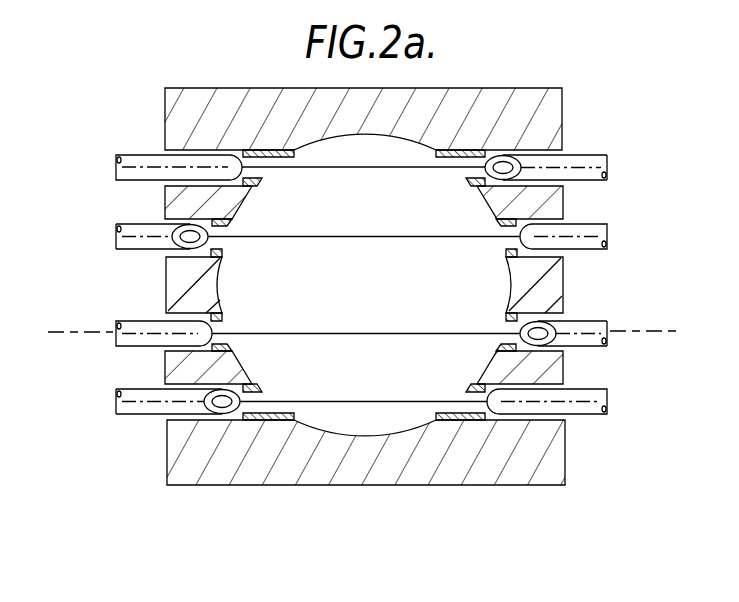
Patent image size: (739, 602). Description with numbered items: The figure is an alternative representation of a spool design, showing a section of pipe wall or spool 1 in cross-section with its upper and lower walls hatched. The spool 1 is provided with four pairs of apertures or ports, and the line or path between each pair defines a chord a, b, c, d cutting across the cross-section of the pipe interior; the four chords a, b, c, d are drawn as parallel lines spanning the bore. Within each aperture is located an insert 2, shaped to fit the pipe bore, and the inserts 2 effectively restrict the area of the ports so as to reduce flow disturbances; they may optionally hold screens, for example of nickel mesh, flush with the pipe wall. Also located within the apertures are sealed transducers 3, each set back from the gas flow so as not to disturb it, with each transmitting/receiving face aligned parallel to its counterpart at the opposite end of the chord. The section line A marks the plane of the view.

The spool 1 is at (183, 290).
The insert 2 is at (475, 180).
The transducer 3 is at (140, 173).
The chord a is at (358, 170).
The chord b is at (358, 236).
The chord c is at (358, 333).
The chord d is at (358, 401).
The section line A- A is at (363, 315).